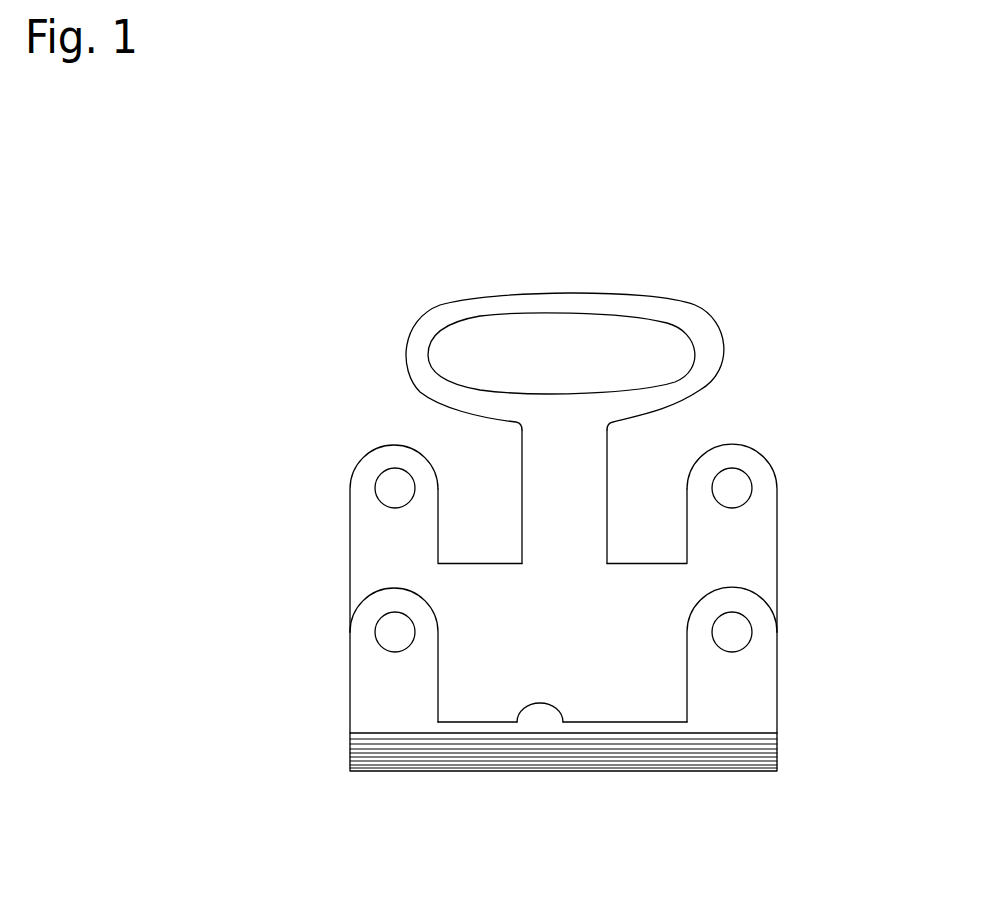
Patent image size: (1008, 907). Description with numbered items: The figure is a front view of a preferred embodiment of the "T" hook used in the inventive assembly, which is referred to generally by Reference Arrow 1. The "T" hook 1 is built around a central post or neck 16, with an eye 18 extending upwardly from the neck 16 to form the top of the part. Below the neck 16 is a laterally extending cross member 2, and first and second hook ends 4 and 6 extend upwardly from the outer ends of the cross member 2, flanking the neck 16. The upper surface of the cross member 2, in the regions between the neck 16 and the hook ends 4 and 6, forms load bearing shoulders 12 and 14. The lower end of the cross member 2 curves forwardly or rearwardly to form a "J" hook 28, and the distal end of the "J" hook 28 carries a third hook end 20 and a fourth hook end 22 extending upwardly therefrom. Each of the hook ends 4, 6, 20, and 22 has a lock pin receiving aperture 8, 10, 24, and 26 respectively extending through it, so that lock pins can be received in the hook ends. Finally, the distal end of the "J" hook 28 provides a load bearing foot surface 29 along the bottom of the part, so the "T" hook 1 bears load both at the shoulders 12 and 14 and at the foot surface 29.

The "T" hook 1 is at (248, 487).
The laterally extending cross member 2 is at (610, 640).
The first hook end 4 is at (738, 538).
The second hook end 6 is at (387, 550).
The lock pin receiving aperture 8 is at (737, 480).
The lock pin receiving aperture 10 is at (390, 483).
The load bearing shoulder 12 is at (646, 563).
The load bearing shoulder 14 is at (482, 563).
The post or neck 16 is at (553, 475).
The eye 18 is at (652, 312).
The third hook end 20 is at (727, 703).
The fourth hook end 22 is at (398, 703).
The lock pin receiving aperture 24 is at (732, 632).
The lock pin receiving aperture 26 is at (392, 632).
The "J" hook 28 is at (687, 750).
The load bearing foot surface 29 is at (524, 706).